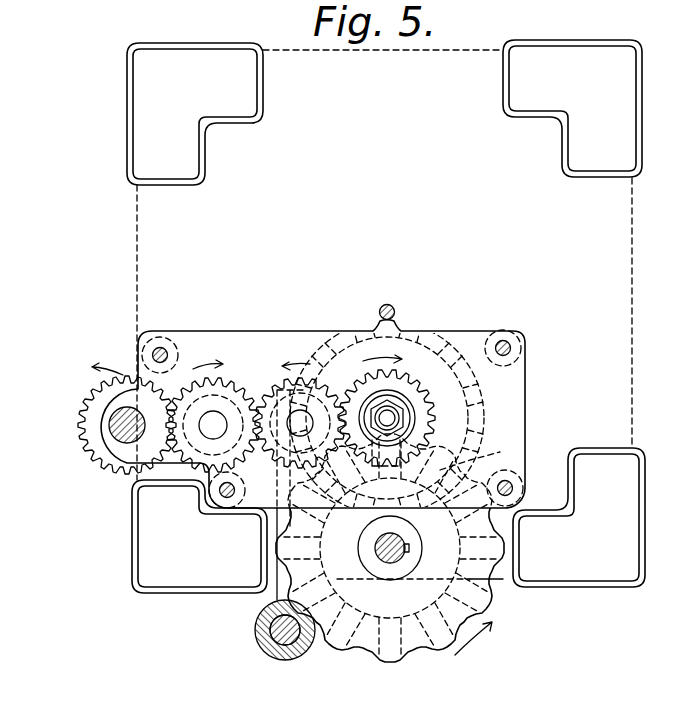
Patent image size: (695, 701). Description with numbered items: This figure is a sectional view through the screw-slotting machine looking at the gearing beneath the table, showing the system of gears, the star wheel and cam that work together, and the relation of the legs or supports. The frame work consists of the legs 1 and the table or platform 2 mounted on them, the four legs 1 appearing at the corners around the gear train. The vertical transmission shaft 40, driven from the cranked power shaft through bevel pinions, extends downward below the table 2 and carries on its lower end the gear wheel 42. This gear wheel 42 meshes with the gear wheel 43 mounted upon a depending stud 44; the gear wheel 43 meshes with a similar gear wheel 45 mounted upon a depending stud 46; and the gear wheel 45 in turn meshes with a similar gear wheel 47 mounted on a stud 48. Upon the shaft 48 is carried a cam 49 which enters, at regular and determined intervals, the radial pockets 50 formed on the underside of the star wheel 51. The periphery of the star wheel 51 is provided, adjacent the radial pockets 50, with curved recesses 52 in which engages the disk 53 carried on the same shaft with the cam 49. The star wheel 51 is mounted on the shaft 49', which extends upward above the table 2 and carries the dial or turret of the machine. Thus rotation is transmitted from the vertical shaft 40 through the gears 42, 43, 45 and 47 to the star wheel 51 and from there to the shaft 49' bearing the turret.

The legs 1 is at (386, 316).
The table or platform 2 is at (384, 265).
The vertical transmission shaft 40 is at (113, 433).
The gear wheel 42 is at (106, 468).
The gear wheel 43 is at (214, 370).
The depending stud 44 is at (215, 422).
The gear wheel 45 is at (313, 383).
The depending stud 46 is at (302, 420).
The gear wheel 47 is at (406, 372).
The stud 48 is at (398, 408).
The cam 49 is at (438, 418).
The shaft 49' is at (409, 548).
The radial pockets 50 is at (502, 451).
The star wheel 51 is at (491, 597).
The curved recesses 52 is at (366, 648).
The disk 53 is at (524, 370).